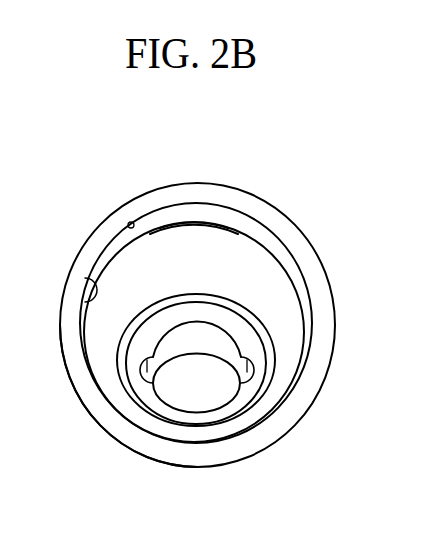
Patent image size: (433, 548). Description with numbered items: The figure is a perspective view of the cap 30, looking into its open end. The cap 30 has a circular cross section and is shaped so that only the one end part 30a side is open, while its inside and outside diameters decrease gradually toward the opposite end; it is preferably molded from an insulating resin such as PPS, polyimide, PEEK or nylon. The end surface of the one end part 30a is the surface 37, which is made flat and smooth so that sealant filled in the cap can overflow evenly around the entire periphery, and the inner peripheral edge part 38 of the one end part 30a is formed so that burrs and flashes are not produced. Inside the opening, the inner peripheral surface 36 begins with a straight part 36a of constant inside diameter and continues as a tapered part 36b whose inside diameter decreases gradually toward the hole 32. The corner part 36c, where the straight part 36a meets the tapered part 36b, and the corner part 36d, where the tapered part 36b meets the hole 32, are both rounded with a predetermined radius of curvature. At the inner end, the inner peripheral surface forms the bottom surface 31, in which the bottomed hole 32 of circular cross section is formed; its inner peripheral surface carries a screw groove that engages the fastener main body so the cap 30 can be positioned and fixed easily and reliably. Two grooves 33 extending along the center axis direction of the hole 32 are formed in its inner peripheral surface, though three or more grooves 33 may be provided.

The cap 30 is at (289, 208).
The one end part 30a is at (214, 195).
The bottom surface 31 is at (242, 403).
The hole 32 is at (218, 345).
The groove 33 is at (141, 358).
The inner peripheral surface 36 is at (128, 273).
The straight part 36a is at (247, 223).
The tapered part 36b is at (188, 233).
The corner part 36c is at (85, 278).
The corner part 36d is at (278, 367).
The surface 37 is at (90, 382).
The inner peripheral edge part 38 is at (129, 222).